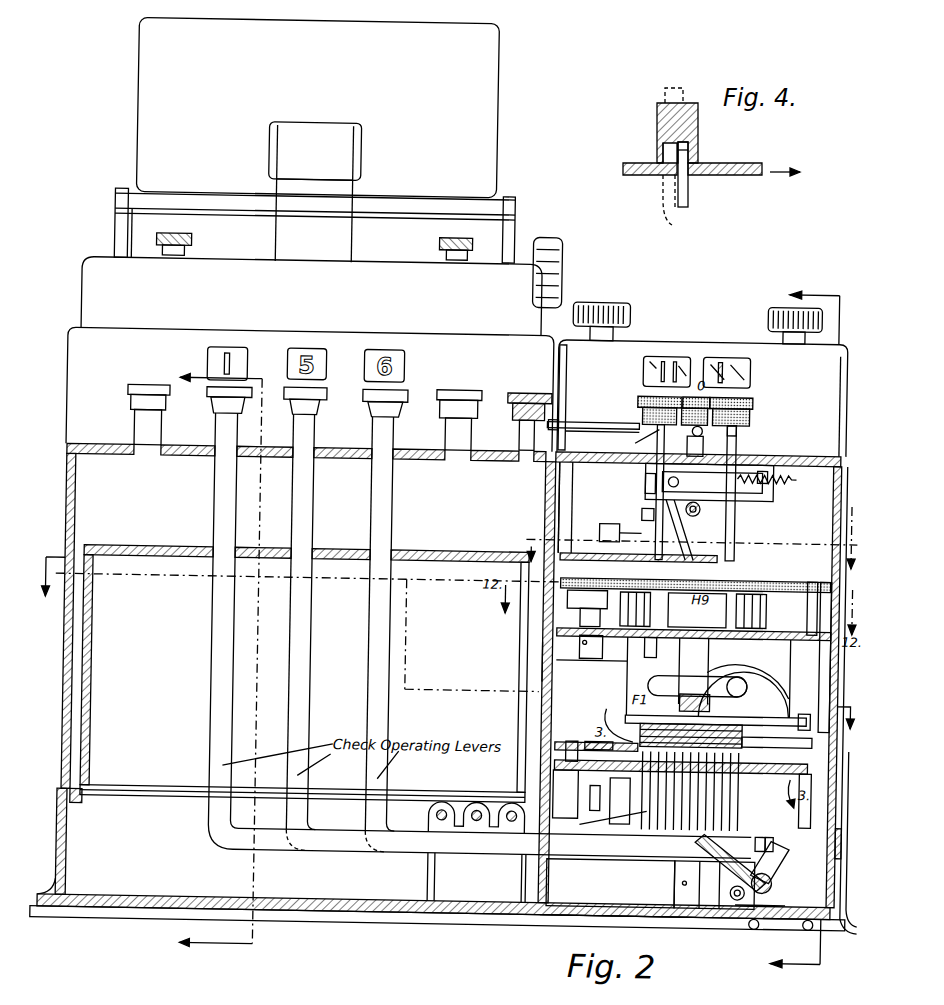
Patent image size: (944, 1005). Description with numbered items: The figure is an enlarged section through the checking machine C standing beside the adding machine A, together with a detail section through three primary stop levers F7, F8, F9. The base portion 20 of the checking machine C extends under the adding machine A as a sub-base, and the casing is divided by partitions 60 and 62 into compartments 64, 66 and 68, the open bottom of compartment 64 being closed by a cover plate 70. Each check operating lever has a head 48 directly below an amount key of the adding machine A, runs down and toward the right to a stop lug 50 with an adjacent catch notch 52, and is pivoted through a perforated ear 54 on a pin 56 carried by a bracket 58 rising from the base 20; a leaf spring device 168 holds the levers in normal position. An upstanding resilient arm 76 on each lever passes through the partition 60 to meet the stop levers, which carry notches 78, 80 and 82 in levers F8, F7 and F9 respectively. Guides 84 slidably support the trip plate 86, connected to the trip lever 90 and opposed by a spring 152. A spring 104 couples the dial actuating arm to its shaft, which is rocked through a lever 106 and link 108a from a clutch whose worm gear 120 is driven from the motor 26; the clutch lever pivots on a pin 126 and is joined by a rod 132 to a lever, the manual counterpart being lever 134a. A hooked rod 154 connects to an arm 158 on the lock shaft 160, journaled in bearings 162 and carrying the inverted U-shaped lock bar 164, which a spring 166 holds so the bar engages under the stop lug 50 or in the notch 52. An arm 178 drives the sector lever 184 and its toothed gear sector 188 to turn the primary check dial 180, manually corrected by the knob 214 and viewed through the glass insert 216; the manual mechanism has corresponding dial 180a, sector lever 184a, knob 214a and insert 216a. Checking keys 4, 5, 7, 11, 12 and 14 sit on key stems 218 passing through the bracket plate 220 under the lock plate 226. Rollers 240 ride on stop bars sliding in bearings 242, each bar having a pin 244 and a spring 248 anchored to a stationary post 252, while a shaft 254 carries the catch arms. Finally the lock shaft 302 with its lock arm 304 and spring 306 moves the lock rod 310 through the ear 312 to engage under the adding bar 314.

In FIG. 2, the adding machine A is at (311, 296).
In FIG. 2, the checking machine C is at (833, 358).
In FIG. 2, the checking key 4 is at (210, 408).
In FIG. 2, the checking key 5 is at (734, 627).
In FIG. 2, the checking key 7 is at (448, 633).
In FIG. 2, the checking key 11 is at (685, 542).
In FIG. 2, the checking key 14 is at (227, 657).
In FIG. 2, the checking key 12 is at (750, 410).
In FIG. 2, the base portion 20 is at (110, 915).
In FIG. 2, the motor 26 is at (838, 822).
In FIG. 2, the head 48 is at (212, 558).
In FIG. 2, the stop lug 50 is at (774, 833).
In FIG. 2, the catch notch 52 is at (757, 832).
In FIG. 2, the perforated ear 54 is at (432, 826).
In FIG. 2, the pin 56 is at (482, 810).
In FIG. 2, the bracket 58 is at (476, 878).
In FIG. 2, the partition 60 is at (762, 778).
In FIG. 2, the partition 62 is at (715, 668).
In FIG. 2, the compartment 64 is at (580, 915).
In FIG. 2, the compartment 66 is at (545, 658).
In FIG. 2, the compartment 68 is at (560, 488).
In FIG. 2, the cover plate 70 is at (655, 903).
In FIG. 2, the resilient arm 76 is at (690, 828).
In FIG. 4, the resilient arm 76 is at (673, 210).
In FIG. 4, the notch 78 is at (688, 139).
In FIG. 4, the notch 80 is at (667, 170).
In FIG. 4, the notch 82 is at (700, 170).
In FIG. 2, the guide 84 is at (742, 748).
In FIG. 2, the trip plate 86 is at (786, 712).
In FIG. 2, the trip lever 90 is at (831, 700).
In FIG. 2, the spring 104 is at (700, 700).
In FIG. 2, the lever 106 is at (684, 882).
In FIG. 2, the link 108a is at (743, 687).
In FIG. 2, the worm gear 120 is at (609, 796).
In FIG. 2, the pin 126 is at (581, 790).
In FIG. 2, the rod 132 is at (628, 840).
In FIG. 2, the lever 134a is at (628, 686).
In FIG. 2, the spring 152 is at (600, 740).
In FIG. 2, the hooked rod 154 is at (612, 716).
In FIG. 2, the arm 158 is at (745, 896).
In FIG. 2, the lock shaft 160 is at (777, 877).
In FIG. 2, the bearing 162 is at (775, 892).
In FIG. 2, the lock bar 164 is at (788, 842).
In FIG. 2, the spring 166 is at (740, 870).
In FIG. 2, the leaf spring device 168 is at (620, 830).
In FIG. 2, the arm 178 is at (760, 712).
In FIG. 2, the primary check dial 180 is at (764, 487).
In FIG. 2, the check dial 180a is at (643, 488).
In FIG. 2, the sector lever 184 is at (820, 644).
In FIG. 2, the sector lever 184a is at (640, 512).
In FIG. 2, the toothed gear sector 188 is at (828, 470).
In FIG. 2, the knob 214 is at (764, 318).
In FIG. 2, the knob 214a is at (626, 306).
In FIG. 2, the glass insert 216 is at (746, 366).
In FIG. 2, the glass insert 216a is at (645, 368).
In FIG. 2, the key stem 218 is at (734, 429).
In FIG. 2, the bracket plate 220 is at (600, 550).
In FIG. 2, the lock plate 226 is at (672, 540).
In FIG. 2, the roller 240 is at (716, 638).
In FIG. 2, the bearing 242 is at (673, 611).
In FIG. 2, the pin 244 is at (720, 553).
In FIG. 2, the spring 248 is at (612, 602).
In FIG. 2, the stationary post 252 is at (766, 612).
In FIG. 2, the shaft 254 is at (590, 656).
In FIG. 2, the lock shaft 302 is at (698, 505).
In FIG. 2, the lock arm 304 is at (701, 431).
In FIG. 2, the spring 306 is at (770, 462).
In FIG. 2, the lock rod 310 is at (600, 423).
In FIG. 2, the ear 312 is at (563, 424).
In FIG. 2, the adding bar 314 is at (512, 392).
In FIG. 4, the primary stop lever F7 is at (657, 128).
In FIG. 4, the primary stop lever F8 is at (665, 98).
In FIG. 4, the primary stop lever F9 is at (692, 150).